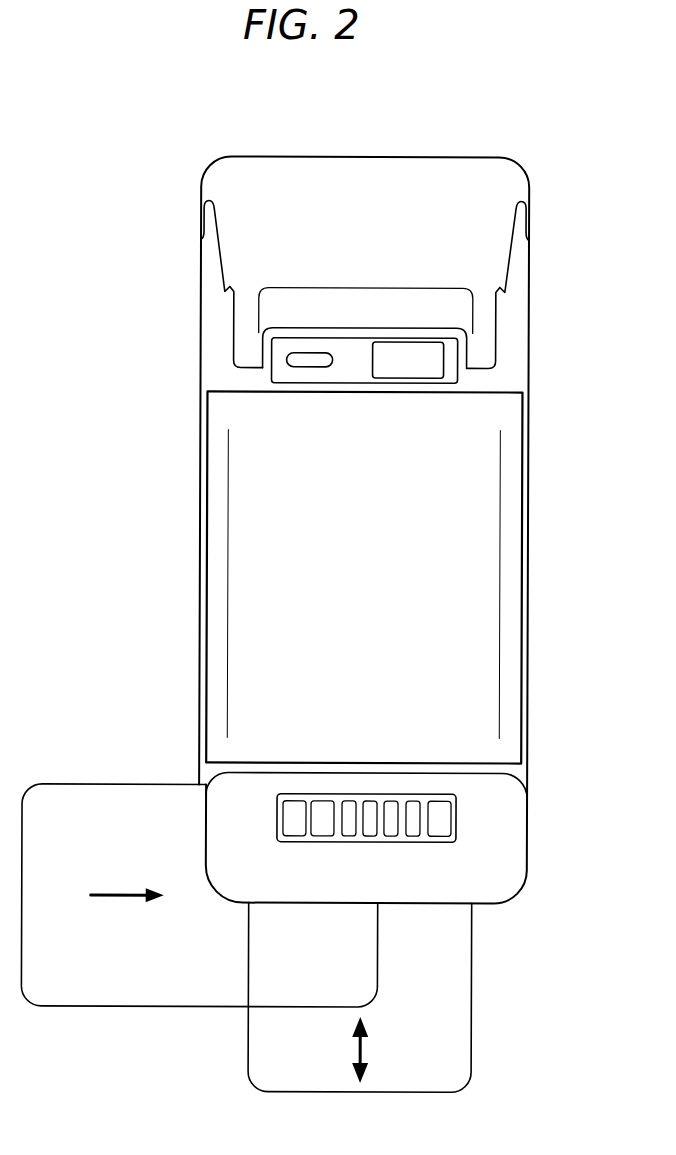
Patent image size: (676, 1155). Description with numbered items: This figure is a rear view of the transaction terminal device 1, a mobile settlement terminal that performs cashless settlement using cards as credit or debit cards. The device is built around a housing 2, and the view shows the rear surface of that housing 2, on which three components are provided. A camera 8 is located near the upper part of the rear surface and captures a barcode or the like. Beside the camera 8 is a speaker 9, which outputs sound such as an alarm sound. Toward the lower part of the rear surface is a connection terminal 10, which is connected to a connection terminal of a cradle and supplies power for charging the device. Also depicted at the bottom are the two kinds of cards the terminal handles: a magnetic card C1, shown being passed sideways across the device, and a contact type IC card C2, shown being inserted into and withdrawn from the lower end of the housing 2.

The transaction terminal device 1 is at (476, 128).
The housing 2 is at (183, 282).
The camera 8 is at (415, 378).
The speaker 9 is at (305, 367).
The connection terminal 10 is at (445, 823).
The magnetic card C1 is at (103, 788).
The contact type IC card C2 is at (473, 985).